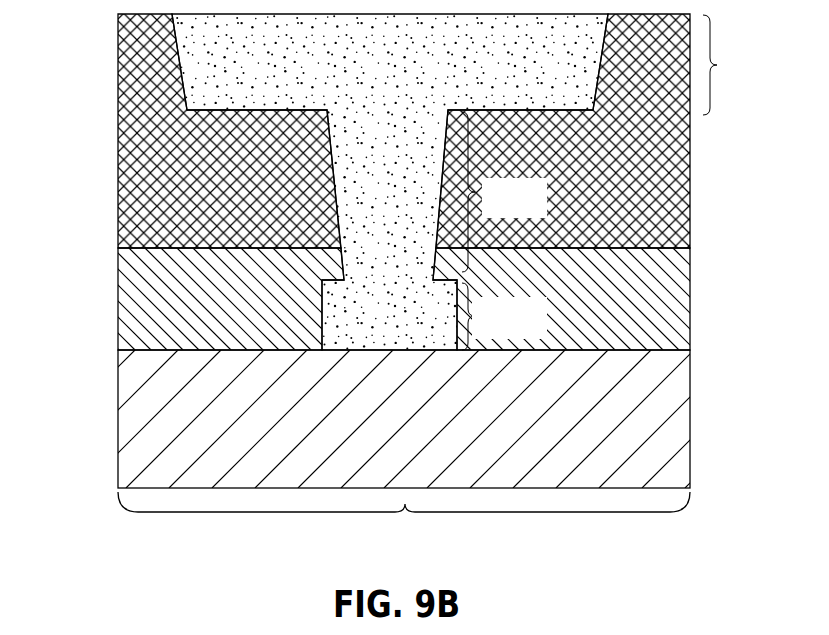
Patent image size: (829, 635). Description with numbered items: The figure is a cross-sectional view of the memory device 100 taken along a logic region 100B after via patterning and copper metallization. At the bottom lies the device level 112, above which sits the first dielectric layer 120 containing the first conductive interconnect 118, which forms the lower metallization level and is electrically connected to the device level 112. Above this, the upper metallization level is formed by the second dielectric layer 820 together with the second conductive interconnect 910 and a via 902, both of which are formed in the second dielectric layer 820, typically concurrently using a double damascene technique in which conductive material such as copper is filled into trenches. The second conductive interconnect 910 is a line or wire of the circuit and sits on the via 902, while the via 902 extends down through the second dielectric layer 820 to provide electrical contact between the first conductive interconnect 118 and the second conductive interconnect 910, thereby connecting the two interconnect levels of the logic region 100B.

The memory device 100 is at (55, 28).
The logic region 100B is at (404, 526).
The device level 112 is at (418, 436).
The first conductive interconnect 118 is at (415, 330).
The first dielectric layer 120 is at (245, 312).
The second dielectric layer 820 is at (247, 196).
The via 902 is at (415, 194).
The second conductive interconnect 910 is at (413, 74).